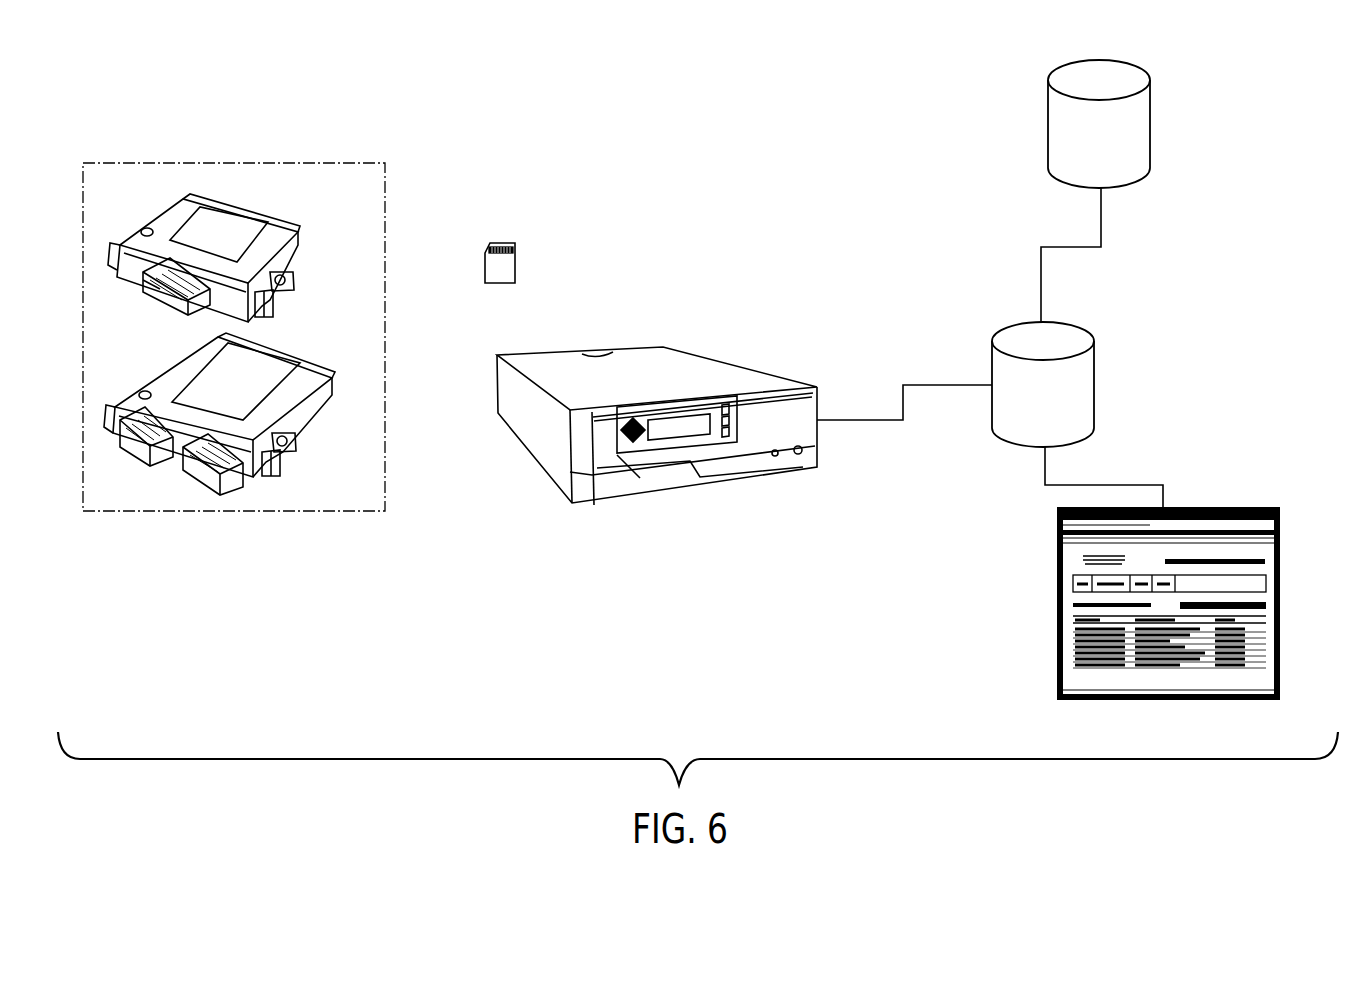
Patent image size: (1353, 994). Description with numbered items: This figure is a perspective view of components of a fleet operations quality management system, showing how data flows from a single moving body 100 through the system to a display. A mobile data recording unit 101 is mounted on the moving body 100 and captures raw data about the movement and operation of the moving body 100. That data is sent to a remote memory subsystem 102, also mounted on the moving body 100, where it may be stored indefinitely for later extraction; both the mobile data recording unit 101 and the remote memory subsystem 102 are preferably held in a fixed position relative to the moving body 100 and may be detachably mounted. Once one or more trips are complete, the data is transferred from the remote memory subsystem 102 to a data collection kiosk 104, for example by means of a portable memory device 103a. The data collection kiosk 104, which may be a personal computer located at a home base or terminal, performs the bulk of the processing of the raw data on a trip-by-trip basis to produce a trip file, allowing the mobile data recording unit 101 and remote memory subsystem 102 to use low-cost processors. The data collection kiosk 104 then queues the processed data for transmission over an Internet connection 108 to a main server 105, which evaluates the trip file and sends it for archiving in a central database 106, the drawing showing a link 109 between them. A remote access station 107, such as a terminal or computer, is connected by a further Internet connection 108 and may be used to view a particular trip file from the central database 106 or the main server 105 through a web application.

The moving body 100 is at (391, 194).
The mobile data recording unit 101 is at (311, 428).
The remote memory subsystem 102 is at (311, 258).
The portable memory device 103a is at (512, 273).
The data collection kiosk 104 is at (777, 378).
The main server 105 is at (1077, 380).
The central database 106 is at (1130, 140).
The remote access station 107 is at (1282, 558).
The Internet connection 108 is at (876, 425).
The connection 109 is at (1044, 291).